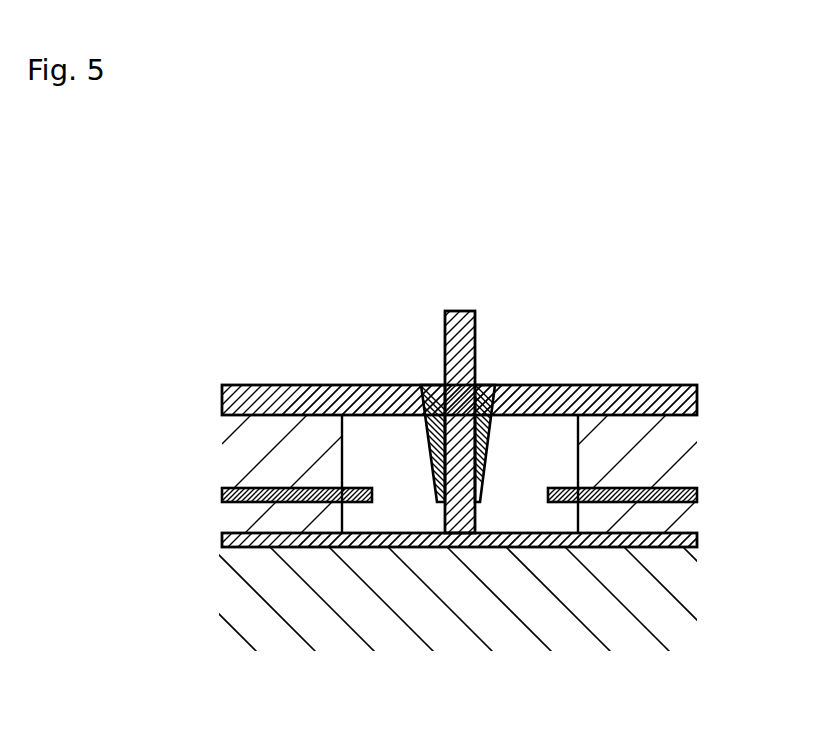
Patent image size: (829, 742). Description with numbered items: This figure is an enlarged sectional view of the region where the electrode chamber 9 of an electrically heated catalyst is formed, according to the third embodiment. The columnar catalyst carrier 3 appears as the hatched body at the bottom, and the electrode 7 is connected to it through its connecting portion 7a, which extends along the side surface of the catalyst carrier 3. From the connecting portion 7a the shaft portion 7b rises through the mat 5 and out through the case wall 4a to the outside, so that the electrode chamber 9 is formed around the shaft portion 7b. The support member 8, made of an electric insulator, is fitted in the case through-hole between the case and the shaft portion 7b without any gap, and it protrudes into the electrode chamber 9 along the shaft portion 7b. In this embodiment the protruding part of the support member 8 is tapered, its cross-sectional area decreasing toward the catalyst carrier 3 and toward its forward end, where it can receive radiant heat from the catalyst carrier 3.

The catalyst carrier 3 is at (280, 592).
The top plate 4a is at (302, 397).
The mat 5 is at (630, 435).
The electrode 7 is at (460, 311).
The connecting portion 7a is at (612, 547).
The shaft portion 7b is at (445, 338).
The support member 8 is at (485, 385).
The electrode chamber 9 is at (380, 450).